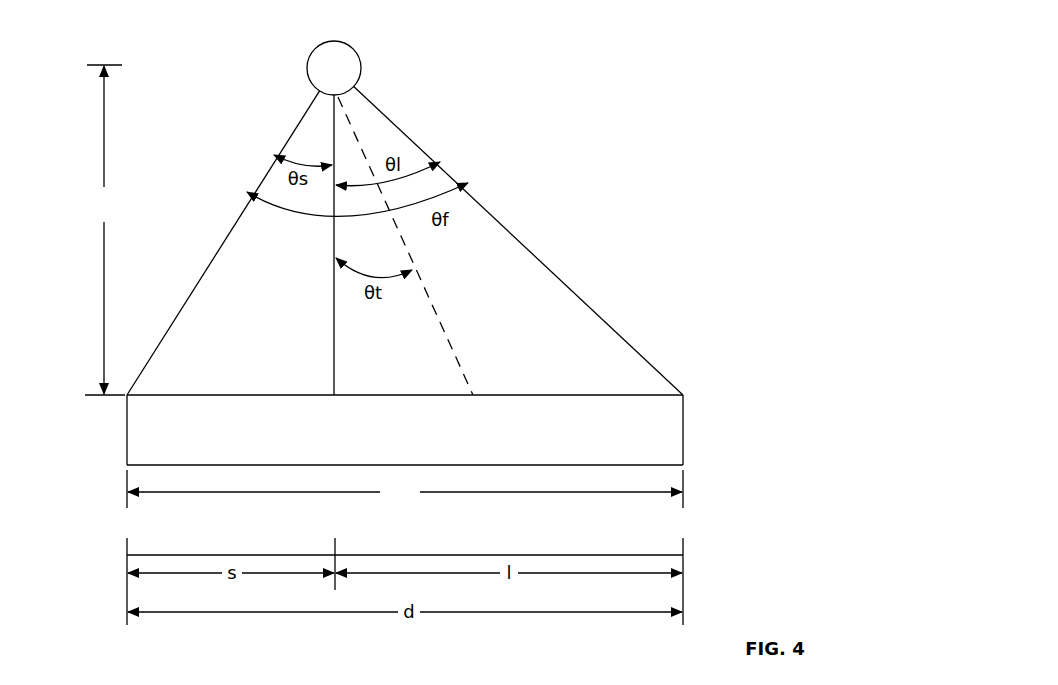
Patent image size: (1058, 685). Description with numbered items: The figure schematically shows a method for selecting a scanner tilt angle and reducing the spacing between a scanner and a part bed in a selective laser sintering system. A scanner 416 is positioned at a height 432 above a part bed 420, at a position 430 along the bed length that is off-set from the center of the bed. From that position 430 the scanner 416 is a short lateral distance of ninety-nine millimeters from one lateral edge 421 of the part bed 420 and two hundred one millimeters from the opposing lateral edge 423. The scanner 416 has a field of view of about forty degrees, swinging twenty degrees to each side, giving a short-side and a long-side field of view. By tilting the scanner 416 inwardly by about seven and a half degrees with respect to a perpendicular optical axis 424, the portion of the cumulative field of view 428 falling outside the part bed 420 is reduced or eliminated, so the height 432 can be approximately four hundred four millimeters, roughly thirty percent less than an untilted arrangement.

The scanner 416 is at (355, 48).
The part bed 420 is at (688, 410).
The lateral edge 421 is at (127, 412).
The opposing lateral edge 423 is at (683, 432).
The perpendicular optical axis 424 is at (334, 348).
The cumulative field of view 428 is at (405, 489).
The position 430 is at (335, 552).
The height 432 is at (105, 230).